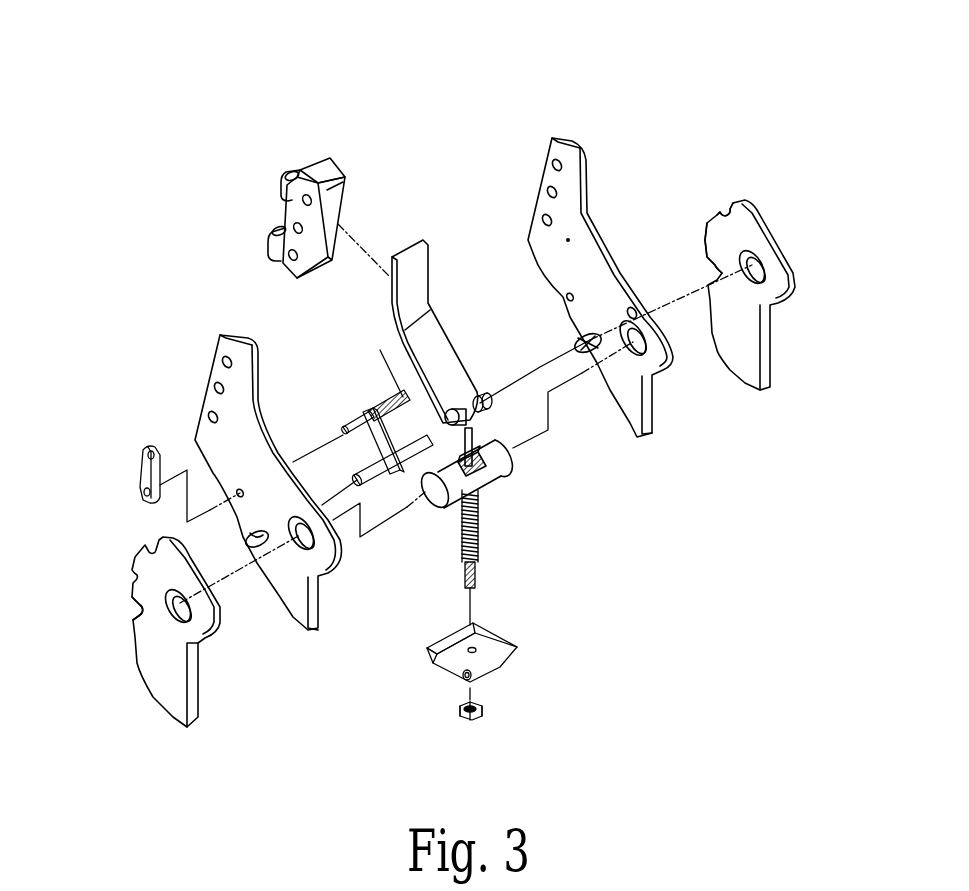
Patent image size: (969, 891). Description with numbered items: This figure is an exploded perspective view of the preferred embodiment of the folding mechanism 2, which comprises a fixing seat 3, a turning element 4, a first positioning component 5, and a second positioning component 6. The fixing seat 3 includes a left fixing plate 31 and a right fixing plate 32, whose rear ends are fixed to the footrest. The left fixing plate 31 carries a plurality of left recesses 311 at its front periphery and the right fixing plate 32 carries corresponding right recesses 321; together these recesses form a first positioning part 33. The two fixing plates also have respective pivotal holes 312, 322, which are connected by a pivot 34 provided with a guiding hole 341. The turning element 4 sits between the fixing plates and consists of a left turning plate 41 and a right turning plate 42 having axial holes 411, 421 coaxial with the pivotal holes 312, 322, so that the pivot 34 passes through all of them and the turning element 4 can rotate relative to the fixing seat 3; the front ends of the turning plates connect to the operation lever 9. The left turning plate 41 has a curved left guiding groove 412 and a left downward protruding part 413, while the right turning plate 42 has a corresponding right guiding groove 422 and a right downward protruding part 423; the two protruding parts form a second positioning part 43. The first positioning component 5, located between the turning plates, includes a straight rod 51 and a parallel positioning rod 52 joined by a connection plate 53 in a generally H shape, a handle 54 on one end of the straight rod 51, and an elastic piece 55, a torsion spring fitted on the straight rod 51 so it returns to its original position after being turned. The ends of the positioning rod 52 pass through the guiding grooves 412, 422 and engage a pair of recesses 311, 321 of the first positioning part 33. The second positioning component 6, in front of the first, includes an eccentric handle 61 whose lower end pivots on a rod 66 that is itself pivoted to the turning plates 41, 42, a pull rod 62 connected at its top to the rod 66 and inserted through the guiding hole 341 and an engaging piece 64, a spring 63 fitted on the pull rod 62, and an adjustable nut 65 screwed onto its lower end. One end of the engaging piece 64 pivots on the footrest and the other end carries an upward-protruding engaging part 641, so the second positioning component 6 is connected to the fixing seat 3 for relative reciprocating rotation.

The folding mechanism 2 is at (229, 37).
The fixing seat 3 is at (780, 393).
The left fixing plate 31 is at (167, 700).
The left recesses 311 is at (140, 610).
The pivotal hole 312 is at (176, 608).
The right fixing plate 32 is at (766, 355).
The right recesses 321 is at (705, 237).
The pivotal hole 322 is at (758, 265).
The first positioning part 33 is at (717, 200).
The turning element 4 is at (195, 382).
The left turning plate 41 is at (290, 602).
The axial hole 411 is at (300, 556).
The left guiding groove 412 is at (248, 541).
The left downward protruding part 413 is at (301, 630).
The right turning plate 42 is at (618, 398).
The axial hole 421 is at (656, 365).
The right guiding groove 422 is at (580, 340).
The right downward protruding part 423 is at (641, 430).
The second positioning part 43 is at (658, 437).
The first positioning component 5 is at (332, 352).
The straight rod 51 is at (345, 425).
The positioning rod 52 is at (370, 470).
The connection plate 53 is at (383, 455).
The handle 54 is at (145, 478).
The elastic piece 55 is at (388, 400).
The second positioning component 6 is at (432, 215).
The eccentric handle 61 is at (423, 290).
The pull rod 62 is at (478, 568).
The spring 63 is at (485, 545).
The engaging piece 64 is at (510, 652).
The engaging part 641 is at (447, 643).
The adjustable nut 65 is at (477, 717).
The rod 66 is at (487, 394).
The operation lever 9 is at (318, 170).
The pivot 34 is at (440, 495).
The guiding hole 341 is at (482, 470).